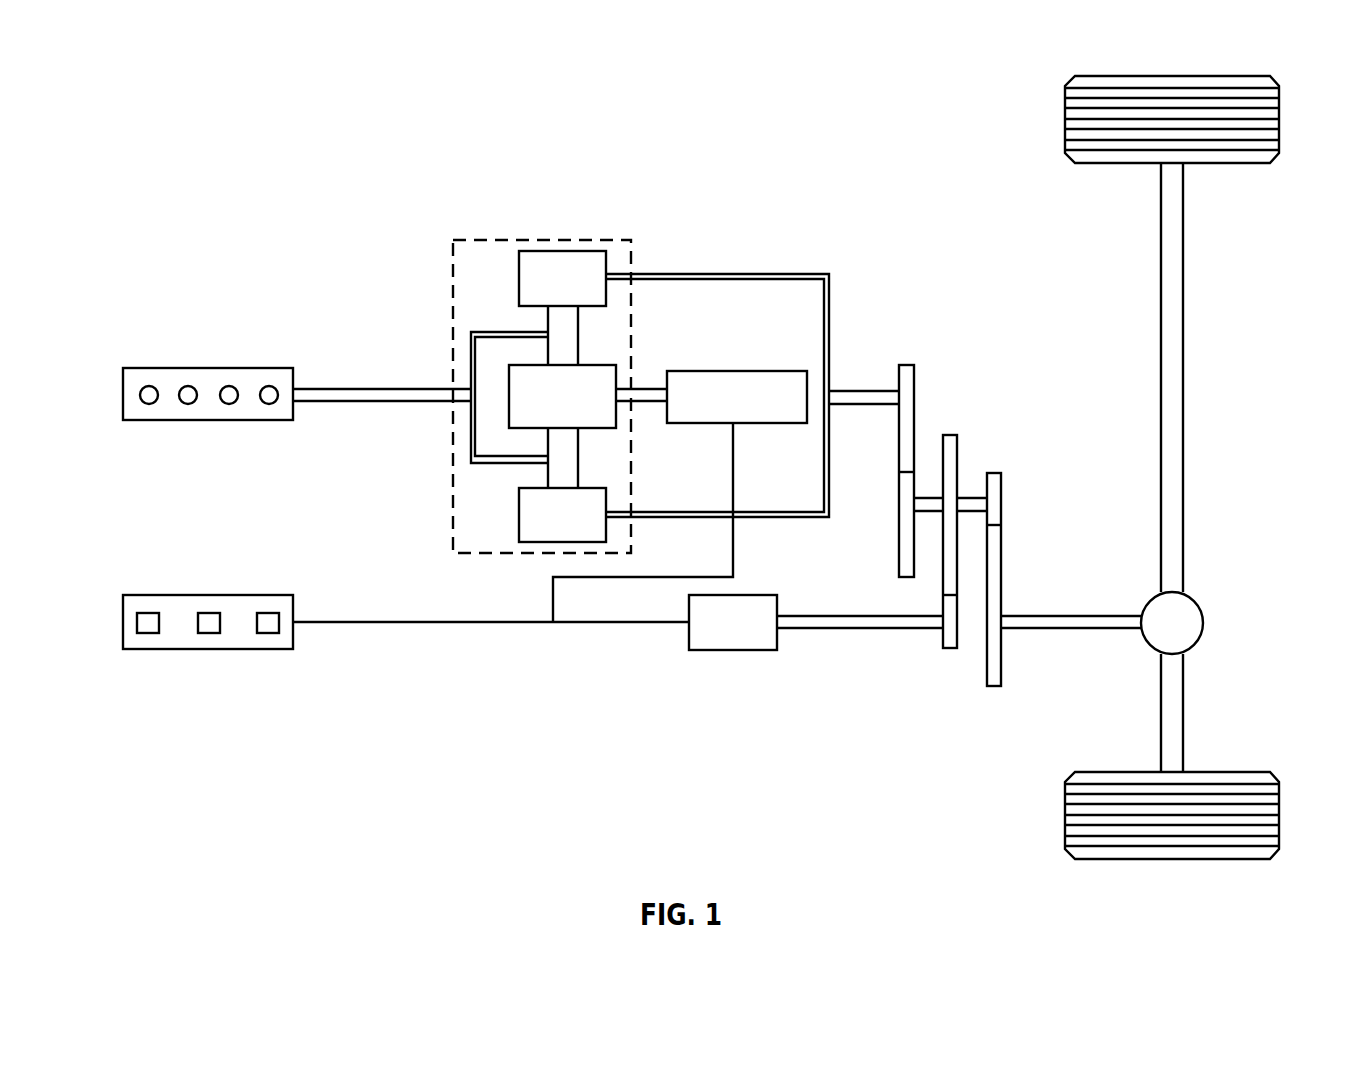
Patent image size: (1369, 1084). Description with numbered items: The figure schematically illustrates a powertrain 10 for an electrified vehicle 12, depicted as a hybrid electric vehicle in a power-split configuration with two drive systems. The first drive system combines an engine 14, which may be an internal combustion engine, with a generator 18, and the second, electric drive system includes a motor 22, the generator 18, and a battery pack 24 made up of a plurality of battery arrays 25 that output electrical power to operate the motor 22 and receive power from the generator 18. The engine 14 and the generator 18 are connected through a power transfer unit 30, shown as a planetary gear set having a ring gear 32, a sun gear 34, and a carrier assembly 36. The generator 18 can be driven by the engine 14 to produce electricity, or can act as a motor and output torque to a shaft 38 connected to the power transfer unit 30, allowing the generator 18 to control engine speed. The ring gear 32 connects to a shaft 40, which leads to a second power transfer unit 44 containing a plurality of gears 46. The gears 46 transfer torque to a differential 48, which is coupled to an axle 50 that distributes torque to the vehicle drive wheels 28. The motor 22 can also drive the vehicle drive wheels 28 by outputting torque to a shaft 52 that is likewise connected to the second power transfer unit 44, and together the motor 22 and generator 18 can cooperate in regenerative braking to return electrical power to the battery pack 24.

The powertrain 10 is at (258, 142).
The electrified vehicle 12 is at (750, 222).
The engine 14 is at (207, 420).
The generator 18 is at (735, 371).
The motor 22 is at (733, 650).
The battery pack 24 is at (123, 608).
The battery arrays 25 is at (148, 633).
The vehicle drive wheels 28 is at (1279, 118).
The power transfer unit 30 is at (516, 232).
The ring gear 32 is at (566, 251).
The sun gear 34 is at (617, 416).
The carrier assembly 36 is at (471, 428).
The shaft 38 is at (642, 389).
The shaft 40 is at (875, 404).
The second power transfer unit 44 is at (1027, 318).
The gears 46 is at (906, 365).
The differential 48 is at (1203, 620).
The axle 50 is at (1183, 410).
The shaft 52 is at (878, 628).